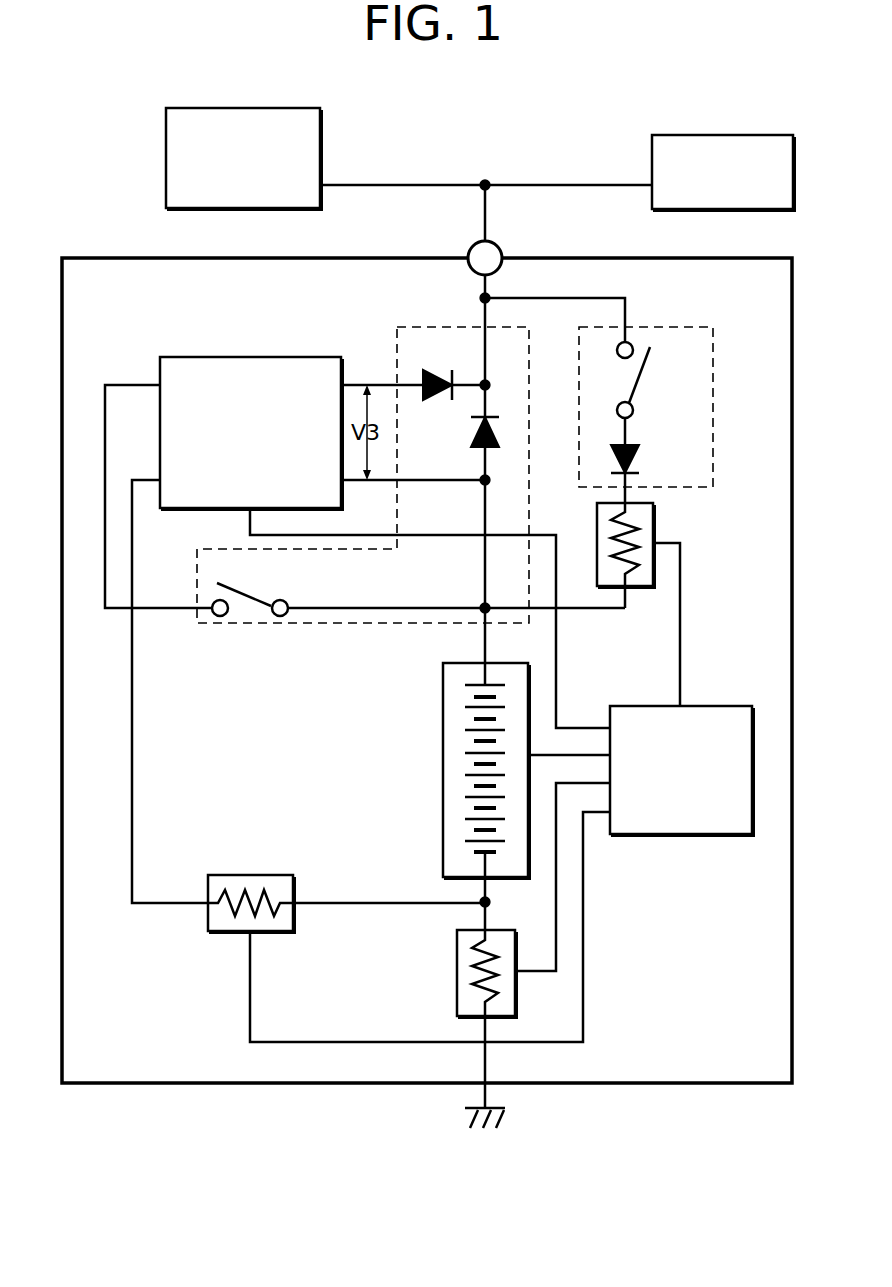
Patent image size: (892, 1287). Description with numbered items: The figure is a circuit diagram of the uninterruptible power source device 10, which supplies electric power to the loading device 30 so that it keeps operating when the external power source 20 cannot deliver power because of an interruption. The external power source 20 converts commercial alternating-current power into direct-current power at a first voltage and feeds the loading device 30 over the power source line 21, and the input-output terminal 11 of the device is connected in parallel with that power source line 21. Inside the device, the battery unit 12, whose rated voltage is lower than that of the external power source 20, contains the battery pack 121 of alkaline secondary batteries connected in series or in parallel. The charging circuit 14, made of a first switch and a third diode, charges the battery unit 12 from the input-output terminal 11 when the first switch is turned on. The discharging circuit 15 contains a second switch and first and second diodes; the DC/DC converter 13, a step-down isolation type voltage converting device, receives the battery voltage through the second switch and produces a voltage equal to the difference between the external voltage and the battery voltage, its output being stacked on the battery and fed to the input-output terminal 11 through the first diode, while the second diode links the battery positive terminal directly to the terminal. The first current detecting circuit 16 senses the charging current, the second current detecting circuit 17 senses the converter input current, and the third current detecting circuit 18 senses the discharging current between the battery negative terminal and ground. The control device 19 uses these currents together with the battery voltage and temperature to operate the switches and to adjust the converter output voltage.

The uninterruptible power source device 10 is at (118, 256).
The input-output terminal 11 is at (469, 247).
The battery unit 12 is at (445, 769).
The battery pack 121 is at (468, 793).
The DC/DC converter 13 is at (200, 356).
The charging circuit 14 is at (683, 321).
The discharging circuit 15 is at (430, 322).
The first current detecting circuit 16 is at (655, 522).
The second current detecting circuit 17 is at (230, 874).
The third current detecting circuit 18 is at (456, 945).
The control device 19 is at (715, 705).
The external power source 20 is at (200, 107).
The power source line 21 is at (430, 184).
The loading device 30 is at (685, 134).